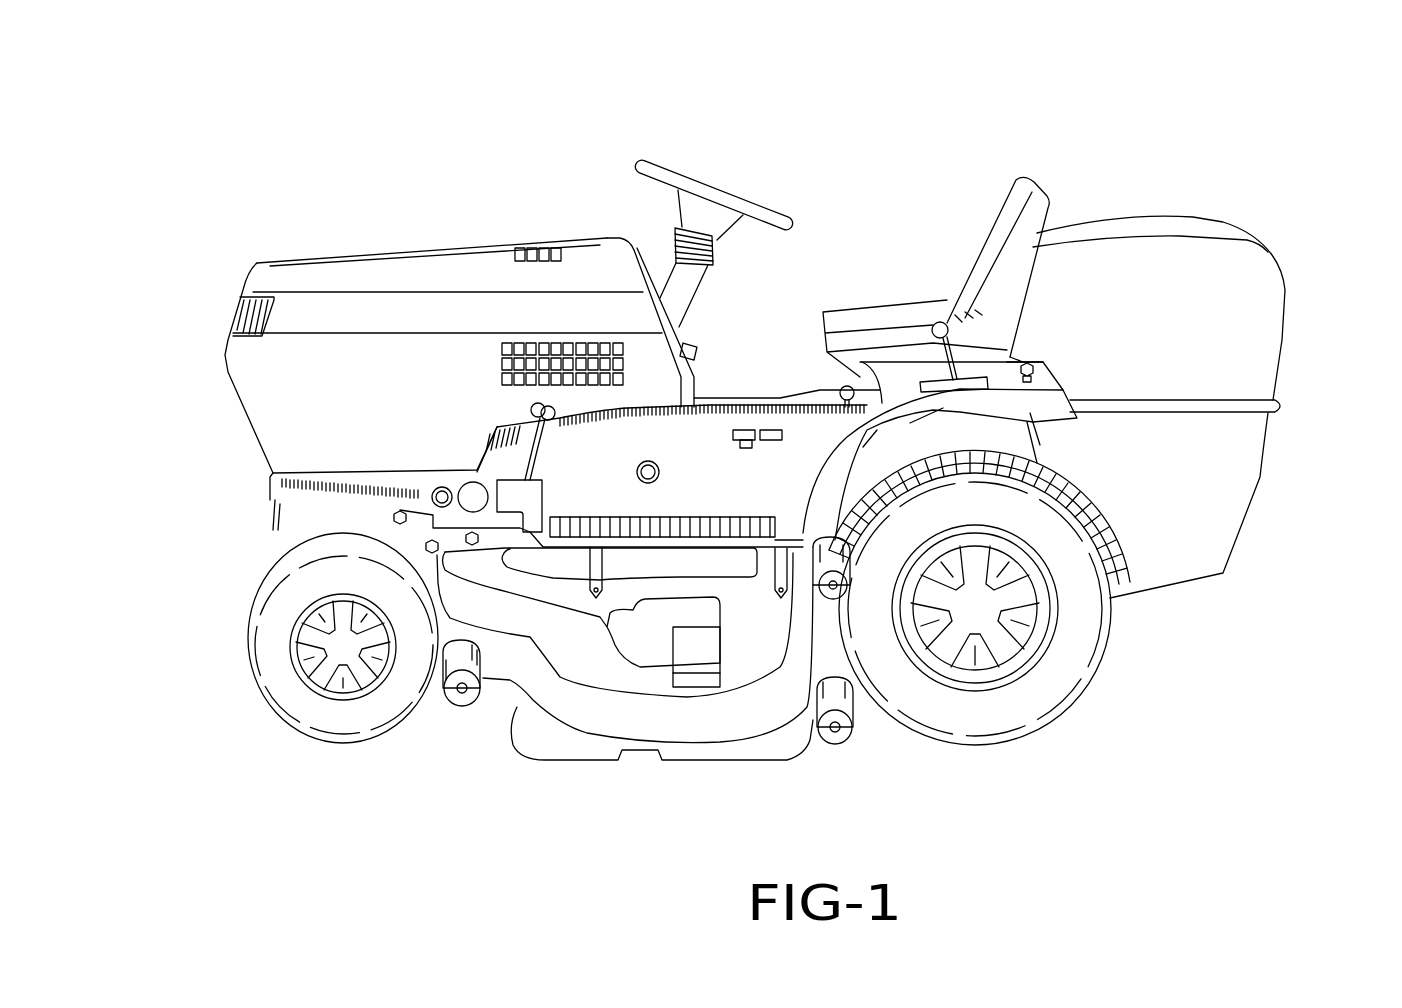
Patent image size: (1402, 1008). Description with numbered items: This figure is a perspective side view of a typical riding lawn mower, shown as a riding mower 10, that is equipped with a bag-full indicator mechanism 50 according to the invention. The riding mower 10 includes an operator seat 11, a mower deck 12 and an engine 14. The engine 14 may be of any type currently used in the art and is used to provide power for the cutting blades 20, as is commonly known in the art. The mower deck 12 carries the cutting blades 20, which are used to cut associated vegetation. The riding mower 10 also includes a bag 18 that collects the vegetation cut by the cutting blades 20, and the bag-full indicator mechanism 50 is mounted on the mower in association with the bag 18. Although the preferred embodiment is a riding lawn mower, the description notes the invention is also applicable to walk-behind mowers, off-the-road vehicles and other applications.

The riding mower 10 is at (885, 159).
The operator seat 11 is at (1010, 197).
The mower deck 12 is at (550, 702).
The engine 14 is at (241, 294).
The bag 18 is at (1203, 490).
The cutting blades 20 is at (757, 785).
The bag-full indicator mechanism 50 is at (1073, 208).